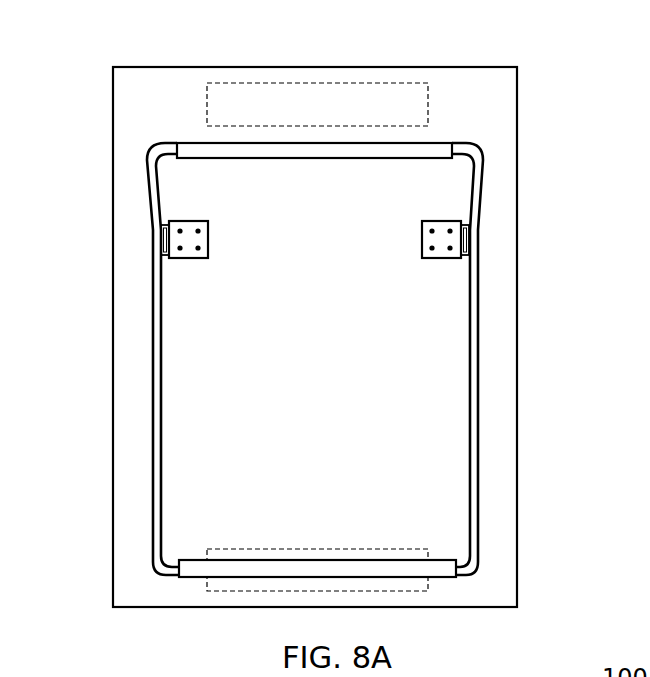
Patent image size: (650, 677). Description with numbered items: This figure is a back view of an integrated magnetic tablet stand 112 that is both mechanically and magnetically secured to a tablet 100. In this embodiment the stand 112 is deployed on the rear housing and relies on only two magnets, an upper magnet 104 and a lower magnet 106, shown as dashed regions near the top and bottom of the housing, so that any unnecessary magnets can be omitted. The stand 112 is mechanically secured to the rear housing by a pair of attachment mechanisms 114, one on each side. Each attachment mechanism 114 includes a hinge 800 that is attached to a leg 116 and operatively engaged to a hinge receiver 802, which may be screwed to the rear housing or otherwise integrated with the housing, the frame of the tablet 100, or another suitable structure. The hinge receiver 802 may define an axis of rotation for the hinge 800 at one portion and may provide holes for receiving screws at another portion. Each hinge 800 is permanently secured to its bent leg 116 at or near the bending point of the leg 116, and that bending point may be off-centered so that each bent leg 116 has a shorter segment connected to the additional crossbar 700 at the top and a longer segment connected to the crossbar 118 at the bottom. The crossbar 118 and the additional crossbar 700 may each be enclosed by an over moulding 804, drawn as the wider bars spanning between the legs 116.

The tablet 100 is at (103, 76).
The upper magnet 104 is at (330, 83).
The lower magnet 106 is at (207, 591).
The integrated magnetic tablet stand 112 is at (481, 426).
The attachment mechanism 114 is at (189, 260).
The leg 116 is at (152, 388).
The crossbar 118 is at (472, 575).
The additional crossbar 700 is at (483, 146).
The hinge 800 is at (163, 228).
The hinge receiver 802 is at (165, 258).
The over moulding 804 is at (418, 141).